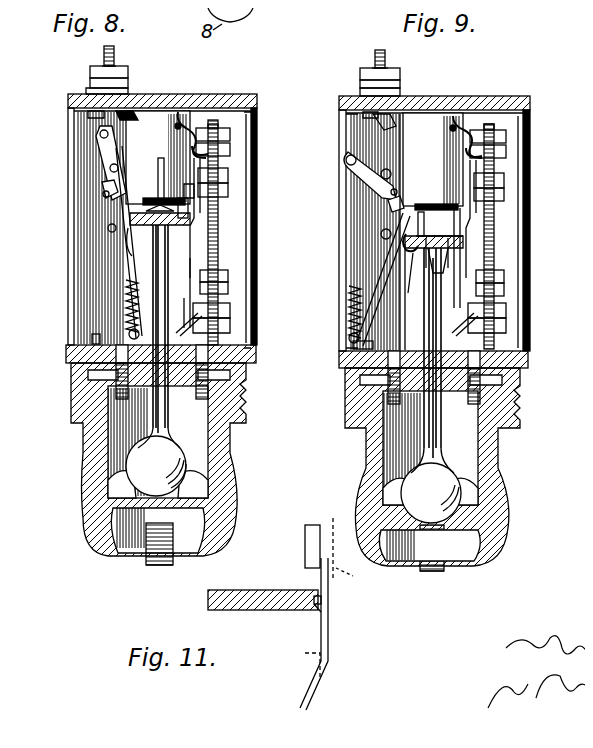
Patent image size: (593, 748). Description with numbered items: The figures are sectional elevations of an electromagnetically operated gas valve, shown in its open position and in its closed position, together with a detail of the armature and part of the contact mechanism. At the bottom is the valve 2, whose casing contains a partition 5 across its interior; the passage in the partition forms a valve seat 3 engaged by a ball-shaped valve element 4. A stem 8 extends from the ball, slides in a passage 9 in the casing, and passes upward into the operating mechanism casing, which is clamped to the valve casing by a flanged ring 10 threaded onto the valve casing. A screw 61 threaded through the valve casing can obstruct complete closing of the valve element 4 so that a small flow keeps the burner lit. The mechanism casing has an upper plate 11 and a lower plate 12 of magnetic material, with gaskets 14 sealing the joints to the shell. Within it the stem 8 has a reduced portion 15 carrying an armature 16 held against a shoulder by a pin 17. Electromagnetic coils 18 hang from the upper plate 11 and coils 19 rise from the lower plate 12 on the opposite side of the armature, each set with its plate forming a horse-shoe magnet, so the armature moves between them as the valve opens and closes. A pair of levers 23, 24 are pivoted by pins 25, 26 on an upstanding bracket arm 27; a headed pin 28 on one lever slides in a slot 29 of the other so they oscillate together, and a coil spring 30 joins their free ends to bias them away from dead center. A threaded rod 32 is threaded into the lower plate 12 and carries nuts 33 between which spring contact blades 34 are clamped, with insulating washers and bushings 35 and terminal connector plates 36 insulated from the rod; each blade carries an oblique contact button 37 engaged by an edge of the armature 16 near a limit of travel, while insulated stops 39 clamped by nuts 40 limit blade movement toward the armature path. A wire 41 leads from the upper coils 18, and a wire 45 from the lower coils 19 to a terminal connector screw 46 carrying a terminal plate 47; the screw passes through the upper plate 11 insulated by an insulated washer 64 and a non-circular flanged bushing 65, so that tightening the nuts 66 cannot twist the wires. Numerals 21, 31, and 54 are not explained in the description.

In FIG. 8, the valve 2 is at (218, 488).
In FIG. 9, the valve 2 is at (500, 505).
In FIG. 8, the valve seat 3 is at (168, 544).
In FIG. 9, the valve seat 3 is at (445, 482).
In FIG. 8, the valve element 4 is at (156, 466).
In FIG. 9, the valve element 4 is at (431, 493).
In FIG. 8, the partition 5 is at (186, 510).
In FIG. 8, the stem 8 is at (158, 420).
In FIG. 9, the stem 8 is at (432, 432).
In FIG. 8, the passage 9 is at (161, 396).
In FIG. 9, the passage 9 is at (433, 396).
In FIG. 8, the flanged ring 10 is at (238, 386).
In FIG. 9, the flanged ring 10 is at (512, 410).
In FIG. 8, the upper plate 11 is at (228, 90).
In FIG. 9, the upper plate 11 is at (520, 92).
In FIG. 8, the lower plate 12 is at (60, 350).
In FIG. 9, the lower plate 12 is at (522, 360).
In FIG. 8, the gaskets 14 is at (250, 103).
In FIG. 9, the gaskets 14 is at (336, 105).
In FIG. 9, the reduced portion 15 is at (439, 218).
In FIG. 9, the armature 16 is at (458, 238).
In FIG. 11, the armature 16 is at (262, 604).
In FIG. 9, the pin 17 is at (416, 273).
In FIG. 8, the electromagnetic coils 18 is at (158, 158).
In FIG. 9, the electromagnetic coils 18 is at (433, 161).
In FIG. 8, the coils 19 is at (109, 337).
In FIG. 9, the coils 19 is at (416, 232).
In FIG. 8, the plunger 21 is at (148, 192).
In FIG. 9, the plunger 21 is at (416, 203).
In FIG. 8, the lever 23 is at (112, 260).
In FIG. 9, the lever 23 is at (383, 279).
In FIG. 8, the lever 24 is at (90, 135).
In FIG. 9, the lever 24 is at (344, 150).
In FIG. 8, the pin 25 is at (100, 222).
In FIG. 9, the pin 25 is at (378, 232).
In FIG. 8, the pin 26 is at (110, 160).
In FIG. 9, the pin 26 is at (384, 165).
In FIG. 9, the bracket arm 27 is at (377, 342).
In FIG. 8, the headed pin 28 is at (90, 180).
In FIG. 9, the headed pin 28 is at (388, 196).
In FIG. 8, the slot 29 is at (95, 192).
In FIG. 9, the slot 29 is at (380, 185).
In FIG. 8, the coil spring 30 is at (116, 288).
In FIG. 9, the coil spring 30 is at (344, 294).
In FIG. 8, the arm 31 is at (136, 248).
In FIG. 8, the rod or stem 32 is at (210, 212).
In FIG. 9, the rod or stem 32 is at (486, 216).
In FIG. 9, the nuts 33 is at (500, 132).
In FIG. 9, the spring contact blades 34 is at (472, 202).
In FIG. 11, the spring contact blades 34 is at (320, 600).
In FIG. 8, the insulating washers and bushings 35 is at (224, 145).
In FIG. 9, the insulating washers and bushings 35 is at (500, 150).
In FIG. 8, the terminal connector plate 36 is at (222, 126).
In FIG. 9, the terminal connector plate 36 is at (496, 128).
In FIG. 8, the contact button 37 is at (214, 228).
In FIG. 9, the contact button 37 is at (446, 245).
In FIG. 11, the contact button 37 is at (310, 626).
In FIG. 8, the insulated stops 39 is at (212, 186).
In FIG. 9, the insulated stops 39 is at (492, 190).
In FIG. 11, the insulated stops 39 is at (297, 545).
In FIG. 8, the nuts 40 is at (222, 170).
In FIG. 9, the nuts 40 is at (498, 172).
In FIG. 8, the wire 41 is at (176, 104).
In FIG. 9, the wire 41 is at (452, 104).
In FIG. 8, the wire 45 is at (124, 108).
In FIG. 9, the wire 45 is at (372, 116).
In FIG. 8, the terminal connector screw 46 is at (96, 48).
In FIG. 9, the terminal connector screw 46 is at (372, 44).
In FIG. 8, the terminal plate or connector 47 is at (88, 70).
In FIG. 9, the terminal plate or connector 47 is at (380, 72).
In FIG. 8, the insulating washer 54 is at (80, 84).
In FIG. 8, the screw 61 is at (142, 556).
In FIG. 9, the screw 61 is at (440, 558).
In FIG. 9, the insulated washers 64 is at (398, 86).
In FIG. 8, the flanged bushings 65 is at (66, 104).
In FIG. 9, the flanged bushings 65 is at (402, 104).
In FIG. 8, the nuts 66 is at (110, 64).
In FIG. 9, the nuts 66 is at (355, 80).